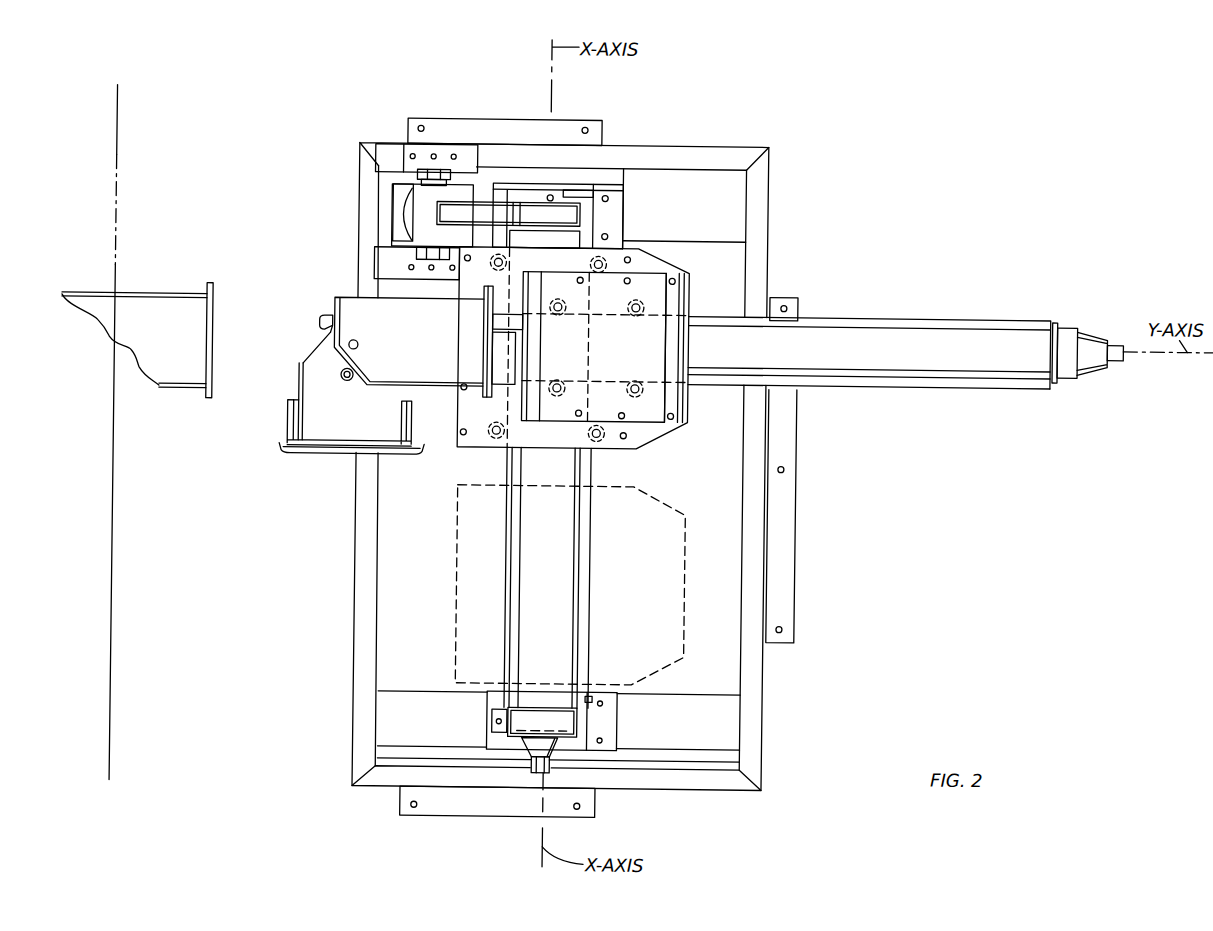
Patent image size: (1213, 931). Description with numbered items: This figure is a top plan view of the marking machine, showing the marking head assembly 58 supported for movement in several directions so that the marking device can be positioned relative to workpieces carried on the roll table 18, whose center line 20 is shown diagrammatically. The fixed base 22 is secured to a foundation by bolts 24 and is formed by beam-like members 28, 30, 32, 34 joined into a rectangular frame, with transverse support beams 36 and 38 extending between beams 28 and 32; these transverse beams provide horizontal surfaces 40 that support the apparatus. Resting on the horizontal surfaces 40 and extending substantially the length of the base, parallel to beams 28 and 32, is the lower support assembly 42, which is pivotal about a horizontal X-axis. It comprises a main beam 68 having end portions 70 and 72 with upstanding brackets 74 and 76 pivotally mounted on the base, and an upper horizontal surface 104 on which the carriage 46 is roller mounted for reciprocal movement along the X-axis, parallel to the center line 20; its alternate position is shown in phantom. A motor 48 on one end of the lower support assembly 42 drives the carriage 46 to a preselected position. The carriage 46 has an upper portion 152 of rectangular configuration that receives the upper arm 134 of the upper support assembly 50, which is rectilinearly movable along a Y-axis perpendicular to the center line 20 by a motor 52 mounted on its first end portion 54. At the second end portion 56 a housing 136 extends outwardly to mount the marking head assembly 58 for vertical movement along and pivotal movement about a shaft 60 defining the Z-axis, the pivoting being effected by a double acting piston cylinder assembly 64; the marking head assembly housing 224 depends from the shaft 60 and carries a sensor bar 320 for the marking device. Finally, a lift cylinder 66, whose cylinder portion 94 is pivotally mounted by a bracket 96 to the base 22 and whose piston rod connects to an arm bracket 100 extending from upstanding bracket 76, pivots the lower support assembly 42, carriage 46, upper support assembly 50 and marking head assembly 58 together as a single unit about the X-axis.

The roll table 18 is at (180, 298).
The center line 20 is at (116, 168).
The fixed base 22 is at (553, 470).
The bolts 24 is at (417, 128).
The beam-like member 28 is at (769, 199).
The beam-like member 30 is at (706, 146).
The beam-like member 32 is at (386, 198).
The beam-like member 34 is at (695, 788).
The transverse support beam 36 is at (708, 232).
The transverse support beam 38 is at (714, 700).
The horizontal surfaces 40 is at (707, 216).
The lower support assembly 42 is at (491, 577).
The carriage 46 is at (596, 466).
The motor 48 is at (489, 748).
The upper support assembly 50 is at (905, 360).
The motor 52 is at (1091, 368).
The first end portion 54 is at (1003, 383).
The second end portion 56 is at (499, 318).
The marking head assembly 58 is at (291, 370).
The shaft 60 is at (357, 343).
The double acting piston cylinder assembly 64 is at (313, 317).
The lift cylinder 66 is at (379, 193).
The main beam 68 is at (507, 526).
The end portion 70 is at (588, 695).
The end portion 72 is at (571, 241).
The upstanding bracket 74 is at (580, 723).
The upstanding bracket 76 is at (577, 208).
The cylinder portion 94 is at (394, 219).
The bracket 96 is at (413, 178).
The arm bracket 100 is at (434, 226).
The upper horizontal surface 104 is at (564, 610).
The upper arm 134 is at (908, 333).
The housing 136 is at (348, 297).
The carriage upper portion 152 is at (693, 398).
The marking head assembly housing 224 is at (306, 390).
The sensor bar 320 is at (284, 448).